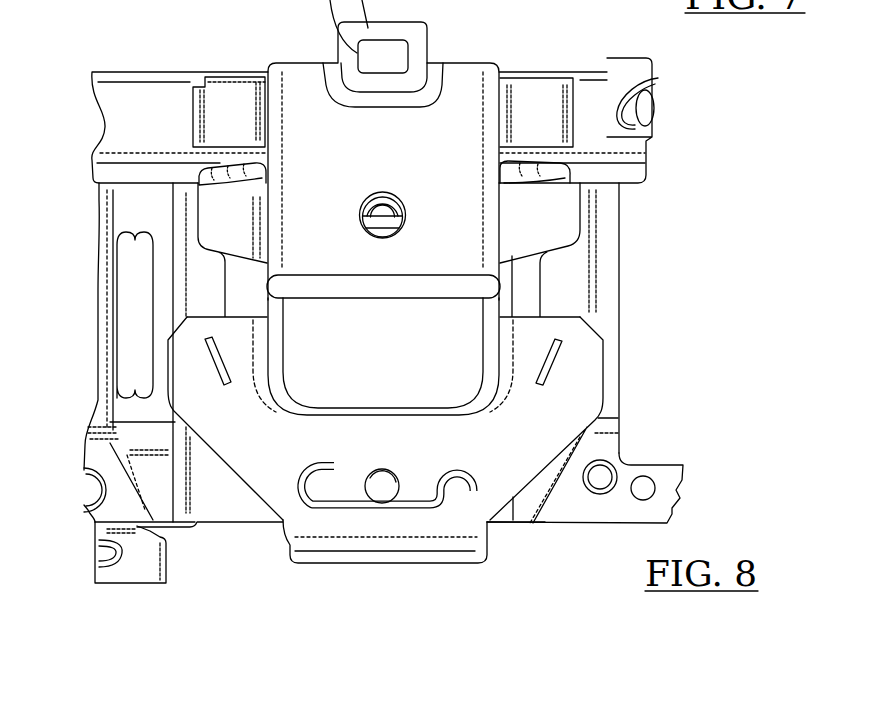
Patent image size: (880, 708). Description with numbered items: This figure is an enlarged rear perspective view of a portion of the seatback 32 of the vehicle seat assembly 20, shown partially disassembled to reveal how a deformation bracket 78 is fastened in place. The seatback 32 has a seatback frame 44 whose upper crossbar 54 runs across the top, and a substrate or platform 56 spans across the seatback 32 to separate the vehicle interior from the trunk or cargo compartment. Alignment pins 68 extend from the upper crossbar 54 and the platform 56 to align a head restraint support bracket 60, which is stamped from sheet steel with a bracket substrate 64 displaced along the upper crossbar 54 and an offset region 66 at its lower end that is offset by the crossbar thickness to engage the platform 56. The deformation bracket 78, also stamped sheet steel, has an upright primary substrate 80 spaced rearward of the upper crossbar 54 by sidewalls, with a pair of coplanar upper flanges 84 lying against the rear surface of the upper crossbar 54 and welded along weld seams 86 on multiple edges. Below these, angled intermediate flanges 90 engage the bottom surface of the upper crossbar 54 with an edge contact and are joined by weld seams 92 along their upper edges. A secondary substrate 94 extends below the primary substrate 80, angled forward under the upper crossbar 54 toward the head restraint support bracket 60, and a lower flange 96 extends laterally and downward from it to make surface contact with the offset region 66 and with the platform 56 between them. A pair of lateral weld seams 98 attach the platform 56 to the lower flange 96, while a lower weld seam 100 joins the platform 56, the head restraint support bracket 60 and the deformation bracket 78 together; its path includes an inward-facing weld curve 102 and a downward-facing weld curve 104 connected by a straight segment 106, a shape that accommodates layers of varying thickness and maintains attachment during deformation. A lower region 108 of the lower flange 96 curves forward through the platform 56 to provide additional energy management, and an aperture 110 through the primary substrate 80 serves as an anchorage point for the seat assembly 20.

The vehicle seat assembly 20 is at (761, 146).
The seatback 32 is at (95, 212).
The seatback frame 44 is at (117, 69).
The upper crossbar 54 is at (146, 110).
The platform 56 is at (163, 253).
The head restraint support bracket 60 is at (605, 432).
The bracket substrate 64 is at (145, 432).
The offset region 66 is at (122, 498).
The alignment pins 68 is at (647, 107).
The deformation bracket 78 is at (311, 97).
The primary substrate 80 is at (458, 92).
The upper flanges 84 is at (227, 112).
The weld seams 86 is at (237, 83).
The intermediate flanges 90 is at (540, 223).
The weld seams 92 is at (540, 182).
The secondary substrate 94 is at (315, 343).
The lower flange 96 is at (580, 379).
The lateral weld seams 98 is at (207, 353).
The lower weld seam 100 is at (453, 504).
The weld curve 102 is at (287, 484).
The weld curve 104 is at (477, 477).
The straight segment 106 is at (324, 508).
The lower region 108 is at (378, 547).
The aperture 110 is at (362, 214).